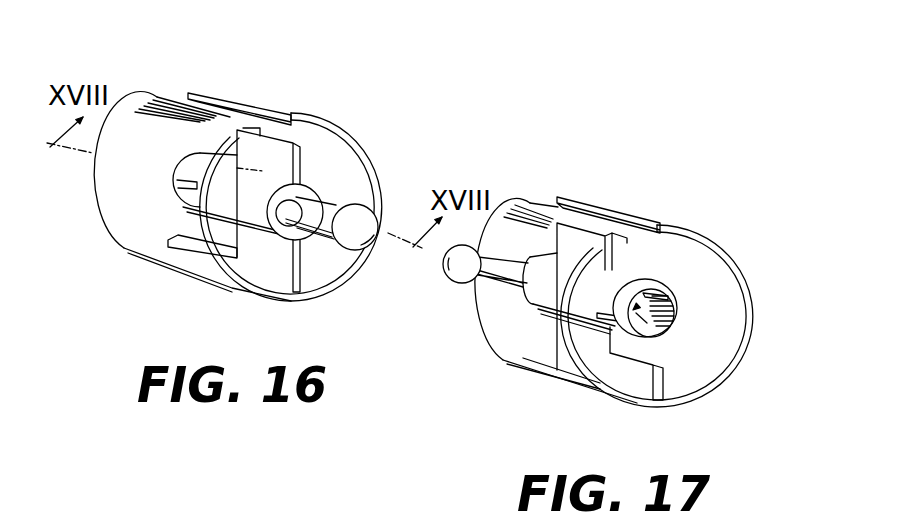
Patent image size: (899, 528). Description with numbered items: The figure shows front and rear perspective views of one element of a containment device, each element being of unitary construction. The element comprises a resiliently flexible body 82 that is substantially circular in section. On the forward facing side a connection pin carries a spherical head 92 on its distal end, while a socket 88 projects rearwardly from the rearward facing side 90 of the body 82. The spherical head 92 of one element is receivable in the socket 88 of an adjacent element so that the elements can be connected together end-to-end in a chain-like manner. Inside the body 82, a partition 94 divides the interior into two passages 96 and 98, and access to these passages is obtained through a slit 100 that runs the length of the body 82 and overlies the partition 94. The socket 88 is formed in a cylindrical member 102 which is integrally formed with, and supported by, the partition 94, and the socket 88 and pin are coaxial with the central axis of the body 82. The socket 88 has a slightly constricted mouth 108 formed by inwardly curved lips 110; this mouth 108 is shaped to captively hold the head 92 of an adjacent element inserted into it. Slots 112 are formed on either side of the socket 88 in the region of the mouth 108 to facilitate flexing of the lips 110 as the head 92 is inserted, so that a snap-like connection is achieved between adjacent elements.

In FIG. 16, the body 82 is at (106, 204).
In FIG. 16, the slit 100 is at (205, 108).
In FIG. 17, the slit 100 is at (600, 218).
In FIG. 16, the cylindrical member 102 is at (262, 180).
In FIG. 16, the partition 94 is at (301, 165).
In FIG. 16, the passage 96 is at (357, 177).
In FIG. 16, the passage 98 is at (283, 276).
In FIG. 16, the spherical head 92 is at (375, 236).
In FIG. 17, the spherical head 92 is at (452, 284).
In FIG. 17, the rearward facing side 90 is at (723, 337).
In FIG. 17, the slots 112 is at (621, 305).
In FIG. 17, the constricted mouth 108 is at (665, 289).
In FIG. 17, the socket 88 is at (657, 338).
In FIG. 17, the lips 110 is at (657, 341).